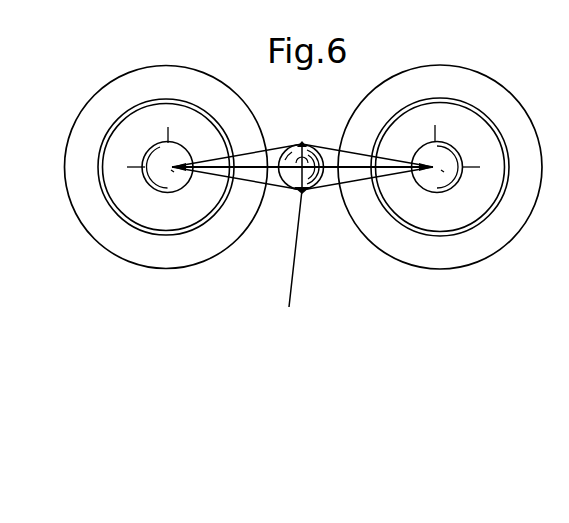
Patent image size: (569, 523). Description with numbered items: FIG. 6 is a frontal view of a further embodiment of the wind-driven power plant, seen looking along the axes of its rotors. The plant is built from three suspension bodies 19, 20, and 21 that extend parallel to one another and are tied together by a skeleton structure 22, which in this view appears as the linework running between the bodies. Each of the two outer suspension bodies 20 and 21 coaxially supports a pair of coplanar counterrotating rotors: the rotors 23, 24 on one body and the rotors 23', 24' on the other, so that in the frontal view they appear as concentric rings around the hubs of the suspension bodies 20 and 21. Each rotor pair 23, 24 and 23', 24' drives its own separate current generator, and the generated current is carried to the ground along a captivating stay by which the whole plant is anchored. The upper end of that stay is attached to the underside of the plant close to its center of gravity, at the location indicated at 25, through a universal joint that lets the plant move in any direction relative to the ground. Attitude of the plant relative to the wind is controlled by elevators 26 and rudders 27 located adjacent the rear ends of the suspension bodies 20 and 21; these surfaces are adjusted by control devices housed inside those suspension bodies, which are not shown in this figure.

The suspension body 19 is at (312, 155).
The suspension body 20 is at (435, 190).
The suspension body 21 is at (160, 190).
The skeleton structure 22 is at (318, 191).
The rotor 23 is at (166, 149).
The rotor 23' is at (440, 149).
The rotor 24 is at (133, 160).
The rotor 24' is at (460, 152).
The connection of captivating stay 25 is at (296, 192).
The elevator 26 is at (137, 168).
The rudder 27 is at (167, 137).